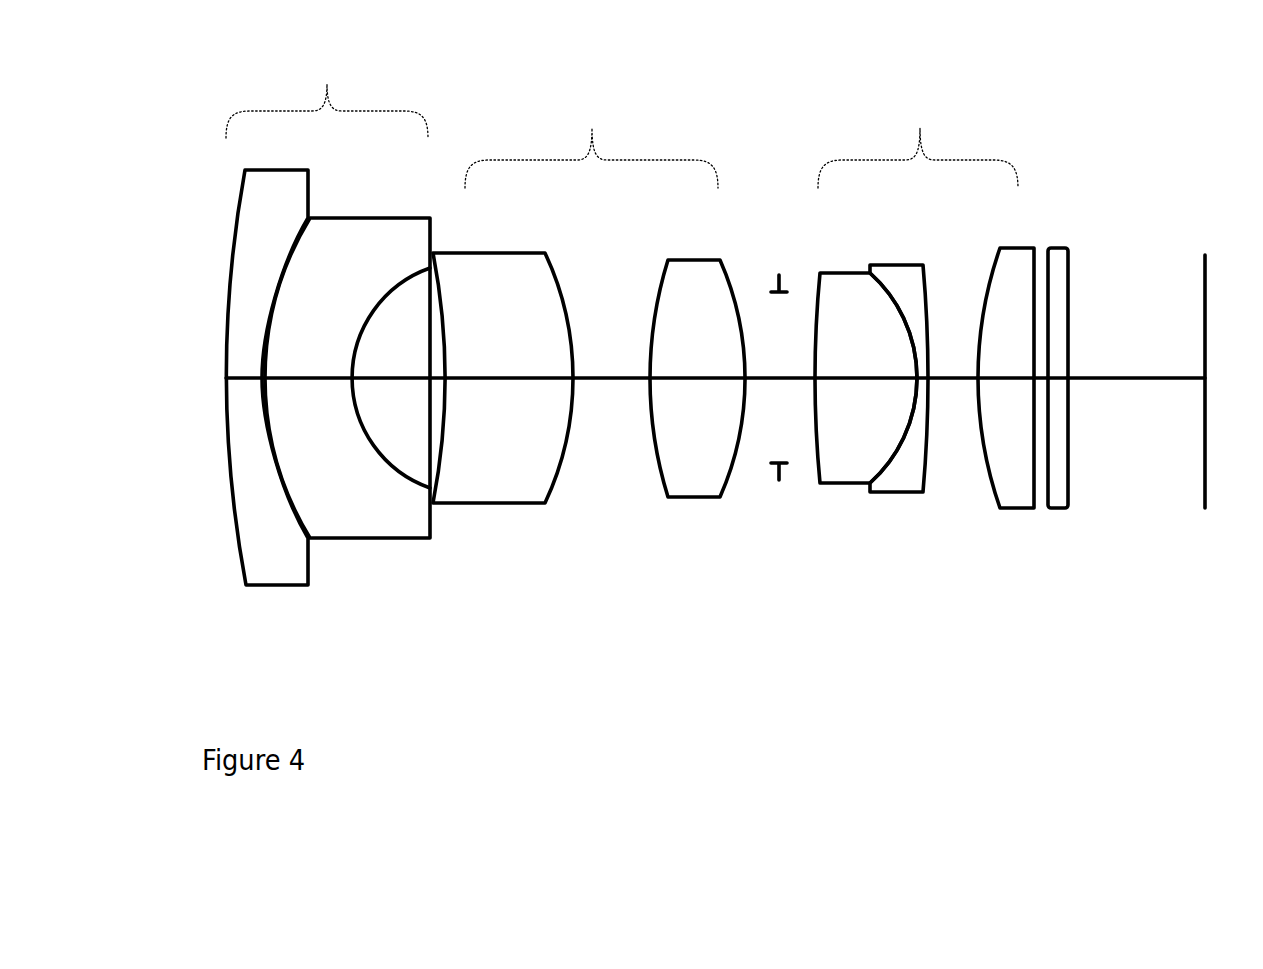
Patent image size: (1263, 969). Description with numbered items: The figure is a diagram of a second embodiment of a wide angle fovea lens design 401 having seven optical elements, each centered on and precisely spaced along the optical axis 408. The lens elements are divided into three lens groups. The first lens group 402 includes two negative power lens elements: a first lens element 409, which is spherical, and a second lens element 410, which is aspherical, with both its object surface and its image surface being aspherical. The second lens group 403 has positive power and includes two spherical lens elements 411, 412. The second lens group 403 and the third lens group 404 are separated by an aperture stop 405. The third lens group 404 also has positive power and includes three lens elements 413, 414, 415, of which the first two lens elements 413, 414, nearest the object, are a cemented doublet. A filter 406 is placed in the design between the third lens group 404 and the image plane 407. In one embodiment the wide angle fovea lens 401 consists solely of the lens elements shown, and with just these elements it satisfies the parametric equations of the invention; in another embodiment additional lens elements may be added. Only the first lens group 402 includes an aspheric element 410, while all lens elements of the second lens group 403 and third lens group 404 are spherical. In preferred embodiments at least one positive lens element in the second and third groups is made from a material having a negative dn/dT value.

The wide angle fovea lens design 401 is at (623, 657).
The first lens group 402 is at (327, 90).
The second lens group 403 is at (591, 133).
The third lens group 404 is at (918, 133).
The aperture stop 405 is at (779, 508).
The filter 406 is at (1080, 232).
The image plane 407 is at (1208, 229).
The optical axis 408 is at (1145, 407).
The first lens element 409 is at (274, 550).
The second lens element 410 is at (376, 522).
The spherical lens element 411 is at (526, 462).
The spherical lens element 412 is at (708, 465).
The lens element 413 is at (853, 454).
The lens element 414 is at (914, 496).
The lens element 415 is at (1012, 484).